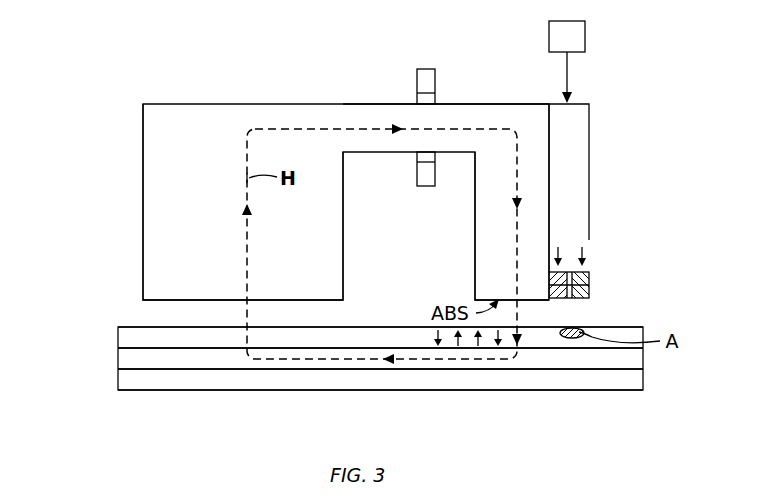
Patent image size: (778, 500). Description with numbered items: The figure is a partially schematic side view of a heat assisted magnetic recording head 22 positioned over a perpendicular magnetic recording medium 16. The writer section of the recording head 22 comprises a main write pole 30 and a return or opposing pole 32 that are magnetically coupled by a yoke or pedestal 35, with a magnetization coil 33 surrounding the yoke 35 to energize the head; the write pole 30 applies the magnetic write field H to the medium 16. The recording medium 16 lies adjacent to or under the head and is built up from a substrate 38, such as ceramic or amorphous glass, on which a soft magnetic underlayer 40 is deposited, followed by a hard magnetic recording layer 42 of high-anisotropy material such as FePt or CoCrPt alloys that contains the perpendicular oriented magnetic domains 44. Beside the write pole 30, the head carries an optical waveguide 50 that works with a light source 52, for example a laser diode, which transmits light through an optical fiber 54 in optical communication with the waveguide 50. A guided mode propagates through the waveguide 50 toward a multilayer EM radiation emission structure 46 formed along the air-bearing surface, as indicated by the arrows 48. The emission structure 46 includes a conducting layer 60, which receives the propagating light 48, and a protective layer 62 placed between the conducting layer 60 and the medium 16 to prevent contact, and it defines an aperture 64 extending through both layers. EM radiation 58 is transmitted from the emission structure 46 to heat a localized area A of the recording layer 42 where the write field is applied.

The magnetic recording medium 16 is at (90, 326).
The heat assisted magnetic recording head 22 is at (108, 111).
The main write pole 30 is at (477, 255).
The return pole 32 is at (155, 210).
The magnetization coil 33 is at (417, 84).
The yoke 35 is at (458, 115).
The substrate 38 is at (135, 383).
The soft magnetic underlayer 40 is at (122, 362).
The hard magnetic recording layer 42 is at (130, 336).
The perpendicular oriented magnetic domains 44 is at (434, 338).
The multilayer EM radiation emission structure 46 is at (614, 265).
The arrows indicating propagating light 48 is at (556, 250).
The optical waveguide 50 is at (597, 167).
The light source 52 is at (577, 35).
The optical fiber 54 is at (569, 76).
The EM radiation 58 is at (573, 317).
The conducting layer 60 is at (590, 280).
The protective layer 62 is at (591, 292).
The aperture 64 is at (570, 275).